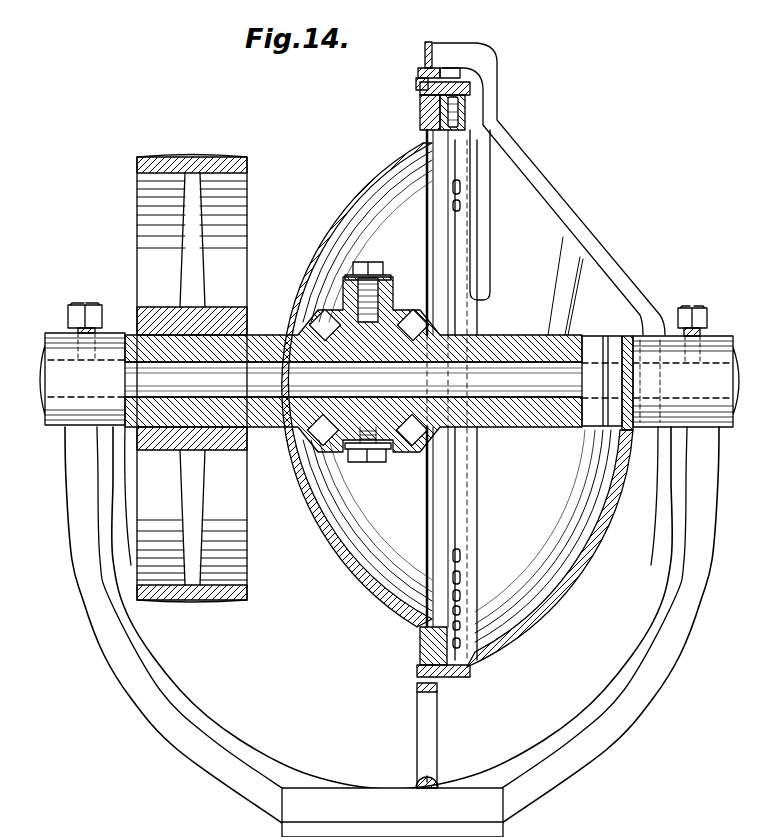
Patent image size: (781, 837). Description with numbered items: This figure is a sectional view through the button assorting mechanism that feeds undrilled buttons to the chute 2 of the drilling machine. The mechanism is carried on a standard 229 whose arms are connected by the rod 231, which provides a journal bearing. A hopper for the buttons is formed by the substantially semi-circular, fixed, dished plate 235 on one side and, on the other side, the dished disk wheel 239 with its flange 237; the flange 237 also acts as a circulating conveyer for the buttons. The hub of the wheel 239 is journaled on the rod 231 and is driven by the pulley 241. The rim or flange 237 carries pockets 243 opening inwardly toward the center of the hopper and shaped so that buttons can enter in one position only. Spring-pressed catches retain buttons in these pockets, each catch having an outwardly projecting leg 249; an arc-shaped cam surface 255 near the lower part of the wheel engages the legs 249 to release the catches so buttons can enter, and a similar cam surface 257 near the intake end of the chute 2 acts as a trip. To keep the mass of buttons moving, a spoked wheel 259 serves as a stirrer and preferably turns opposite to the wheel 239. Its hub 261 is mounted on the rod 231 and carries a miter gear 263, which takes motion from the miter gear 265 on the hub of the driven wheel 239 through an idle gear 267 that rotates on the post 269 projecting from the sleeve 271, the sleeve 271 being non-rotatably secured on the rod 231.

The chute 2 is at (482, 222).
The standard 229 is at (640, 692).
The rod 231 is at (555, 393).
The dished plate 235 is at (560, 610).
The flange 237 is at (452, 87).
The dished disk wheel 239 is at (353, 576).
The pulley 241 is at (232, 165).
The pockets 243 is at (456, 576).
The leg 249 is at (418, 84).
The cam surface 255 is at (423, 698).
The cam surface 257 is at (420, 73).
The spoked wheel 259 is at (452, 487).
The hub 261 is at (507, 420).
The miter gear 263 is at (413, 440).
The miter gear 265 is at (320, 425).
The idle gear 267 is at (388, 303).
The post 269 is at (372, 283).
The sleeve 271 is at (348, 452).